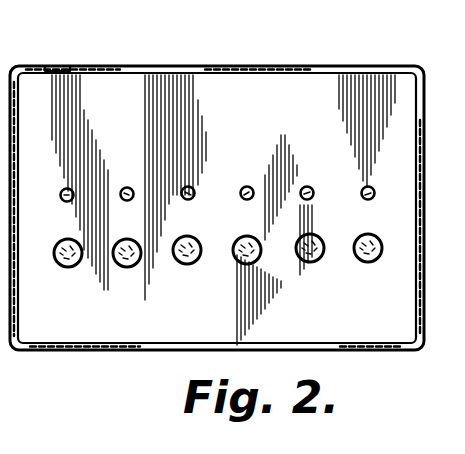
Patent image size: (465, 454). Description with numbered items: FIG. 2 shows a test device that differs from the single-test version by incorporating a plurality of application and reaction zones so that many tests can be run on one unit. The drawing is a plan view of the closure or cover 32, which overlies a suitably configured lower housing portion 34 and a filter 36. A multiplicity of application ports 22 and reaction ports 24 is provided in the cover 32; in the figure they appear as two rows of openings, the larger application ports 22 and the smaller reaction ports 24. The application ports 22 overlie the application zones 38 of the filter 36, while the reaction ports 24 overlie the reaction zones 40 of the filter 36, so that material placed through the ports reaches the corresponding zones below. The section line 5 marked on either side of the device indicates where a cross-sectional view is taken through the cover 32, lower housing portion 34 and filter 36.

The section line 5- 5 is at (62, 2).
The application ports 22 is at (72, 267).
The reaction ports 24 is at (129, 187).
The closure or cover 32 is at (216, 330).
The lower housing portion 34 is at (330, 350).
The filter 36 is at (190, 264).
The application zones 38 is at (364, 262).
The reaction zones 40 is at (308, 187).